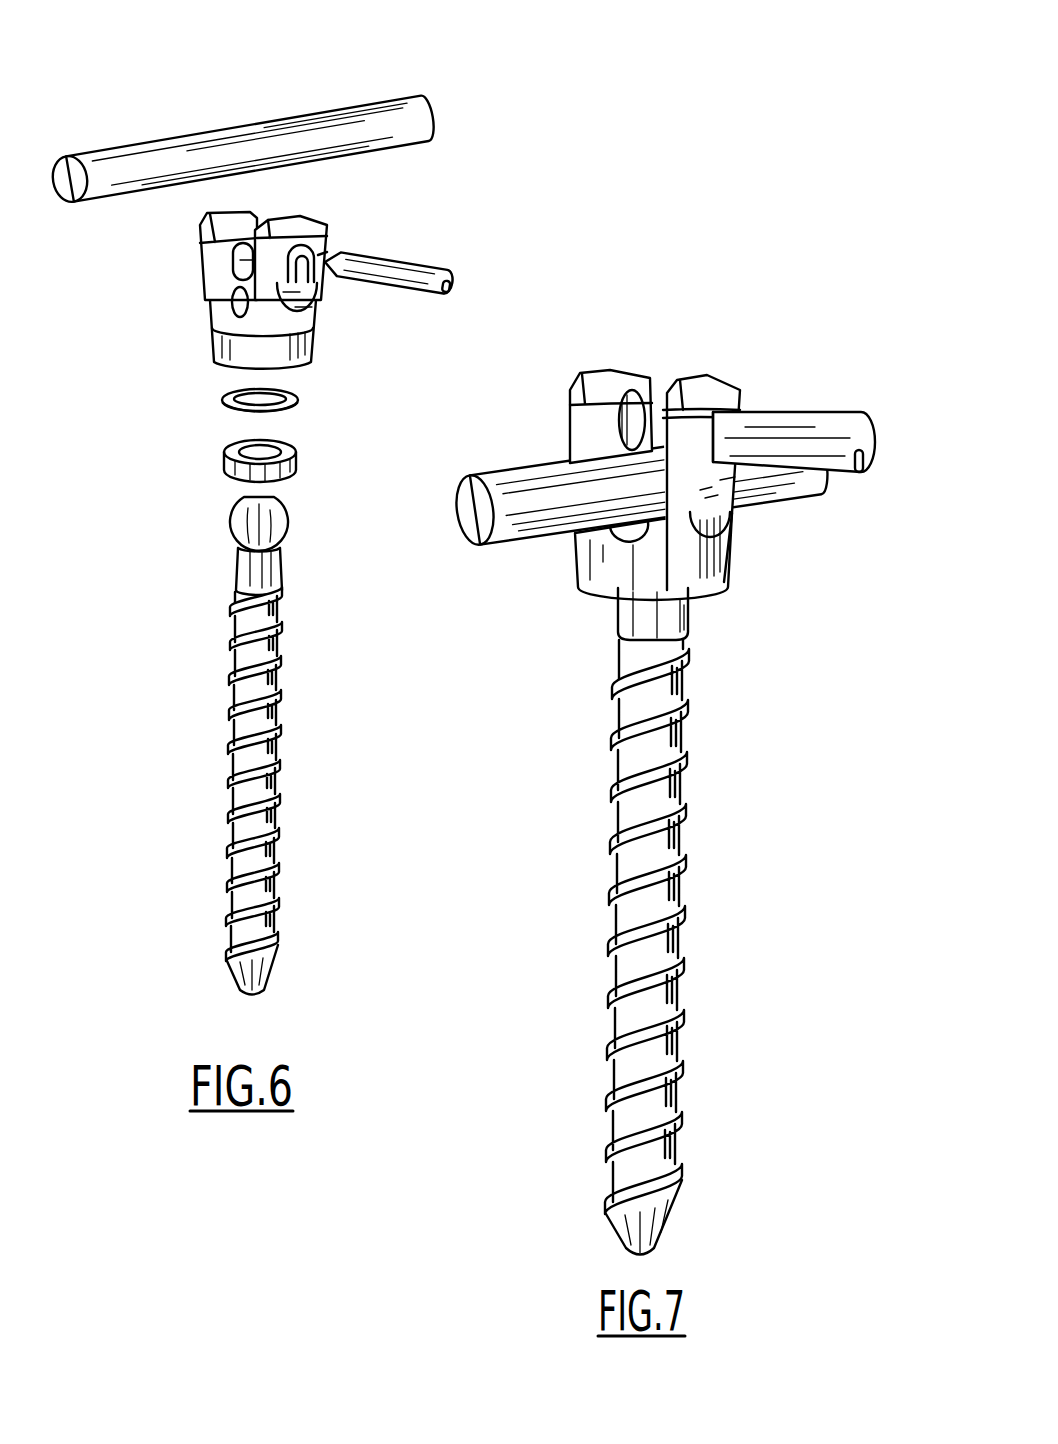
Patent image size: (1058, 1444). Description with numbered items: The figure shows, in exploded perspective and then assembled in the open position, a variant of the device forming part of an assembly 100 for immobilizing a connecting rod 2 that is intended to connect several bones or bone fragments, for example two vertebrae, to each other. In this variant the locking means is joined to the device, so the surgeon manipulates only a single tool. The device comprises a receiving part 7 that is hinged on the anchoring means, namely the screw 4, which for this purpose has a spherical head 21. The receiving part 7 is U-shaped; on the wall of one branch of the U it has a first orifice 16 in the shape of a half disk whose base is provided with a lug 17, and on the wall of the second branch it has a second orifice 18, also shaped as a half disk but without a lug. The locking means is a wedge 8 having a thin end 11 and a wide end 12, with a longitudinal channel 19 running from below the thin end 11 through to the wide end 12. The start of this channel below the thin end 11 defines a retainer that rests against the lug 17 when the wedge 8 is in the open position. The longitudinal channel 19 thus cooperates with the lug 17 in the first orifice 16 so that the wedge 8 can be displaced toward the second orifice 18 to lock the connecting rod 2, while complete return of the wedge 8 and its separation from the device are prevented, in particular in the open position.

In FIG. 6, the assembly 100 is at (222, 108).
In FIG. 7, the assembly 100 is at (838, 362).
In FIG. 6, the connecting rod 2 is at (444, 100).
In FIG. 7, the connecting rod 2 is at (500, 495).
In FIG. 6, the screw 4 is at (296, 584).
In FIG. 7, the screw 4 is at (688, 740).
In FIG. 6, the receiving part 7 is at (196, 341).
In FIG. 7, the receiving part 7 is at (566, 440).
In FIG. 6, the wedge 8 is at (415, 266).
In FIG. 7, the wedge 8 is at (777, 430).
In FIG. 6, the thin end 11 is at (330, 256).
In FIG. 6, the wide end 12 is at (455, 272).
In FIG. 6, the first orifice 16 is at (307, 253).
In FIG. 6, the lug 17 is at (317, 278).
In FIG. 6, the second orifice 18 is at (250, 262).
In FIG. 6, the longitudinal channel 19 is at (450, 292).
In FIG. 7, the longitudinal channel 19 is at (860, 474).
In FIG. 6, the spherical head 21 is at (292, 527).